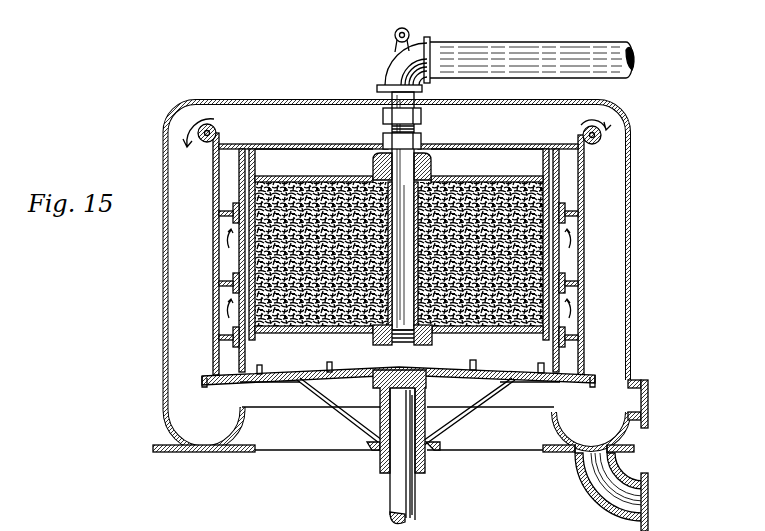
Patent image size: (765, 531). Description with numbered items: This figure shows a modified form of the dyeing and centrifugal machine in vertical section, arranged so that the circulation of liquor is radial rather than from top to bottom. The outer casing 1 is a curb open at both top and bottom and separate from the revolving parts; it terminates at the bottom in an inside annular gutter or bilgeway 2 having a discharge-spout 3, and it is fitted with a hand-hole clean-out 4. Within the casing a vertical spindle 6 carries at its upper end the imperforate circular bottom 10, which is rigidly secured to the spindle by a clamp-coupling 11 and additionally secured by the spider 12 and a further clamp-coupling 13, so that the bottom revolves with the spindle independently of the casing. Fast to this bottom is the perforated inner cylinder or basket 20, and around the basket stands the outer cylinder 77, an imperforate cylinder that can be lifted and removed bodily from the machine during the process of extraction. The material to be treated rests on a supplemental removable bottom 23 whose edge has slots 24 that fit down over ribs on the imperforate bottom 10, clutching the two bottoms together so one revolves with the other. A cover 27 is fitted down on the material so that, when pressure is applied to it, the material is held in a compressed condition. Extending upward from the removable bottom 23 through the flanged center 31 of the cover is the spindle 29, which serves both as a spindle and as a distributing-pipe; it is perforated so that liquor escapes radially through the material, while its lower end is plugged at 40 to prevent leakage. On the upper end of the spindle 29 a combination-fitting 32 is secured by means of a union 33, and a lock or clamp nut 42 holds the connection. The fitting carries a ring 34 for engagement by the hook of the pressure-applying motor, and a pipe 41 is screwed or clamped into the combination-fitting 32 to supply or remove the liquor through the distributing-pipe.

The outer casing 1 is at (634, 216).
The bilgeway 2 is at (393, 429).
The discharge-spout 3 is at (619, 488).
The hand-hole clean-out 4 is at (648, 404).
The vertical spindle 6 is at (386, 456).
The imperforate circular bottom 10 is at (512, 378).
The clamp-coupling 11 is at (428, 406).
The spider 12 is at (340, 418).
The clamp-coupling 13 is at (424, 443).
The perforated inner cylinder 20 is at (247, 258).
The supplemental removable bottom 23 is at (302, 338).
The slots 24 is at (337, 352).
The cover 27 is at (502, 177).
The spindle 29 is at (431, 167).
The flanged center 31 is at (373, 164).
The combination-fitting 32 is at (391, 61).
The union 33 is at (383, 116).
The ring 34 is at (390, 33).
The plug 40 is at (402, 228).
The pipe 41 is at (562, 46).
The lock-nut 42 is at (421, 141).
The outer cylinder 77 is at (213, 318).